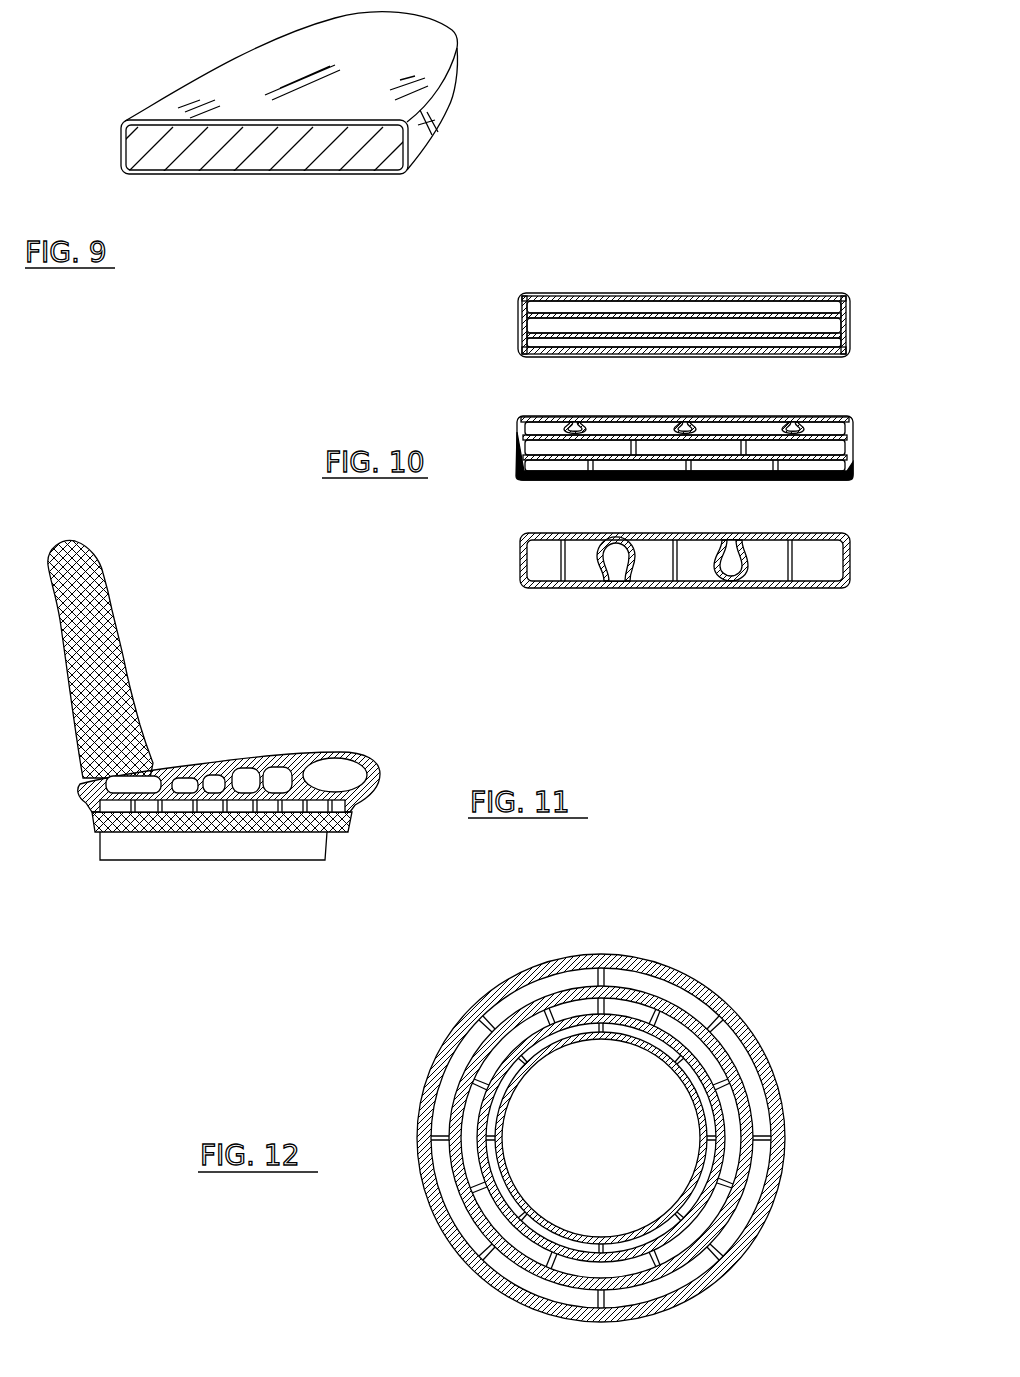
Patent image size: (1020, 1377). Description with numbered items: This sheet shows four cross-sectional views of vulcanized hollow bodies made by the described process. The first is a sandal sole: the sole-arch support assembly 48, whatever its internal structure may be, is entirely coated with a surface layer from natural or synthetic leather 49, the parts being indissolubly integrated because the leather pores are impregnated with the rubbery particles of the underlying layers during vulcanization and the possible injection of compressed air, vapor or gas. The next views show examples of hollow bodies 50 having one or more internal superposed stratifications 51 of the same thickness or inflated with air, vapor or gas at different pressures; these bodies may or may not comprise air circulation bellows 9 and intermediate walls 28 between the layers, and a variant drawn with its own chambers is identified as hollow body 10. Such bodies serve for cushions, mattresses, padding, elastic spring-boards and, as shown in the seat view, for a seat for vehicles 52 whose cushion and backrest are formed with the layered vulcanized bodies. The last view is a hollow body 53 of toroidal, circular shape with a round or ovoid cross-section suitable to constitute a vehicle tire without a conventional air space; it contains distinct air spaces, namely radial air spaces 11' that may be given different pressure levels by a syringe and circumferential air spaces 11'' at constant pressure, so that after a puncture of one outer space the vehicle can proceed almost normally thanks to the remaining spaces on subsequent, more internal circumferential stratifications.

In FIG. 9, the sole-arch support assembly 48 is at (305, 152).
In FIG. 9, the surface layer from natural or synthetic leather 49 is at (437, 133).
In FIG. 10, the hollow body 50 is at (520, 322).
In FIG. 10, the internal superposed stratifications 51 is at (714, 342).
In FIG. 11, the internal superposed stratifications 51 is at (335, 778).
In FIG. 10, the air circulation bellows 9 is at (682, 418).
In FIG. 10, the intermediate walls 28 is at (750, 450).
In FIG. 10, the cushion pad 10 is at (563, 559).
In FIG. 11, the cushion pad 10 is at (177, 832).
In FIG. 11, the seat for vehicles 52 is at (362, 808).
In FIG. 12, the hollow body 53 is at (632, 958).
In FIG. 12, the circumferential air spaces 11'' is at (590, 1128).
In FIG. 12, the radial air spaces 11' is at (569, 1152).